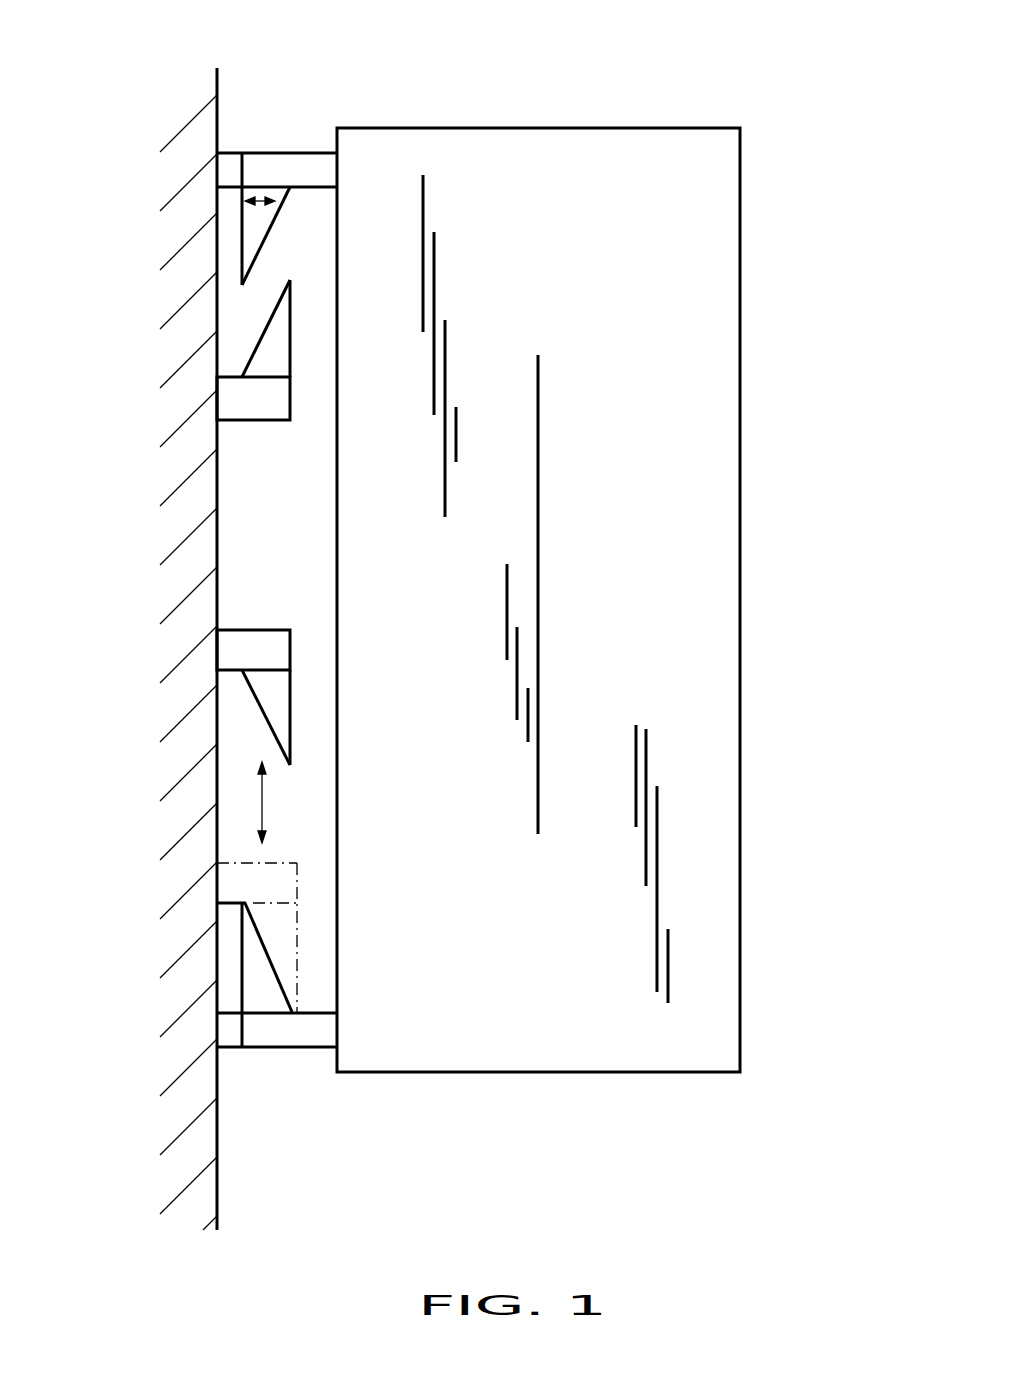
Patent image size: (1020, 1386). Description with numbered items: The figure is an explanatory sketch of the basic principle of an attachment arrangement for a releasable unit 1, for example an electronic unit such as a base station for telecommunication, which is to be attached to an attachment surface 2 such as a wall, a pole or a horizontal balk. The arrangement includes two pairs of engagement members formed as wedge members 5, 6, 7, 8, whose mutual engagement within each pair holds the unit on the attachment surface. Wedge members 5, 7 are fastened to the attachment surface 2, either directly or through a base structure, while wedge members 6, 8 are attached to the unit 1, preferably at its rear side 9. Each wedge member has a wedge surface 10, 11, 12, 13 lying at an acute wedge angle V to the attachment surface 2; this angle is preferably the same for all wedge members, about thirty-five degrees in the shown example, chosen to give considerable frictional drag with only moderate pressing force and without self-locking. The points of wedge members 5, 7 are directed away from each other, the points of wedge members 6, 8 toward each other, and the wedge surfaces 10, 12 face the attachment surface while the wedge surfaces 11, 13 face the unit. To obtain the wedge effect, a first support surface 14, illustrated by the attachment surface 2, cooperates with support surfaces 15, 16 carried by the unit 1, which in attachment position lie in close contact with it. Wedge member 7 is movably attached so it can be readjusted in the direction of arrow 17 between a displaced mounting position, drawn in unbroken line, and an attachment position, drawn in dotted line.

The unit 1 is at (662, 103).
The attachment surface 2 is at (220, 1145).
The wedge member 5 is at (268, 358).
The wedge member 6 is at (252, 245).
The wedge member 7 is at (280, 723).
The wedge member 8 is at (255, 963).
The rear side 9 is at (337, 970).
The wedge surface 10 is at (270, 318).
The wedge surface 11 is at (258, 246).
The wedge surface 12 is at (261, 710).
The wedge surface 13 is at (267, 947).
The first support surface 14 is at (220, 96).
The support surface 15 is at (217, 172).
The support surface 16 is at (217, 1030).
The arrow 17 is at (262, 808).
The wedge angle V is at (262, 200).